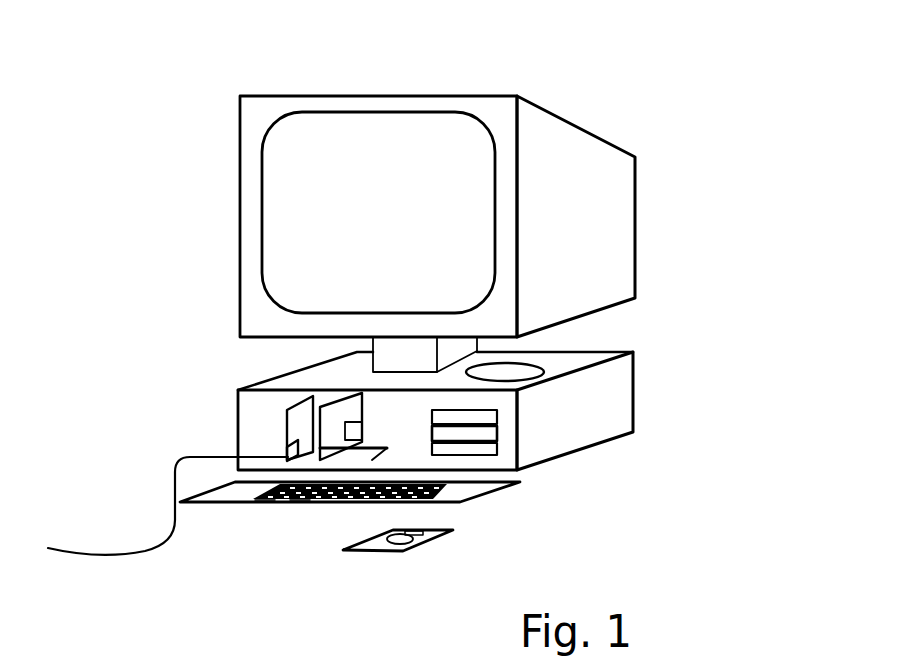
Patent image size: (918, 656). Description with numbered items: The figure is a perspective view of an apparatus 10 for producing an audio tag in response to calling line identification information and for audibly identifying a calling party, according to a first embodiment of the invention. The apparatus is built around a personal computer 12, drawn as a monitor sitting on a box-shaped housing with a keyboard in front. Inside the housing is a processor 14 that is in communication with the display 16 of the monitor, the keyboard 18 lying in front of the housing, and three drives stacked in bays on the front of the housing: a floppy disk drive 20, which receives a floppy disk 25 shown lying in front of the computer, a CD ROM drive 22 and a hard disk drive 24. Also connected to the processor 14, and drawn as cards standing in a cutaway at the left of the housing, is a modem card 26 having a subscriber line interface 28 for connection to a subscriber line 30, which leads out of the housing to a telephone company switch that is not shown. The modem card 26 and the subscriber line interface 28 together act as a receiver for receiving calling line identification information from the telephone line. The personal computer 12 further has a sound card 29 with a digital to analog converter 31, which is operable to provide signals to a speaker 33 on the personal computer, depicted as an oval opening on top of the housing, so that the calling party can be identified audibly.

The apparatus 10 is at (592, 40).
The personal computer 12 is at (583, 435).
The processor 14 is at (300, 500).
The display 16 is at (448, 150).
The keyboard 18 is at (475, 490).
The floppy disk drive 20 is at (497, 447).
The CD ROM drive 22 is at (497, 428).
The hard disk drive 24 is at (497, 410).
The floppy disk 25 is at (425, 547).
The modem card 26 is at (305, 410).
The subscriber line interface 28 is at (292, 440).
The sound card 29 is at (267, 502).
The subscriber line 30 is at (120, 557).
The digital to analog converter 31 is at (348, 420).
The speaker 33 is at (542, 365).